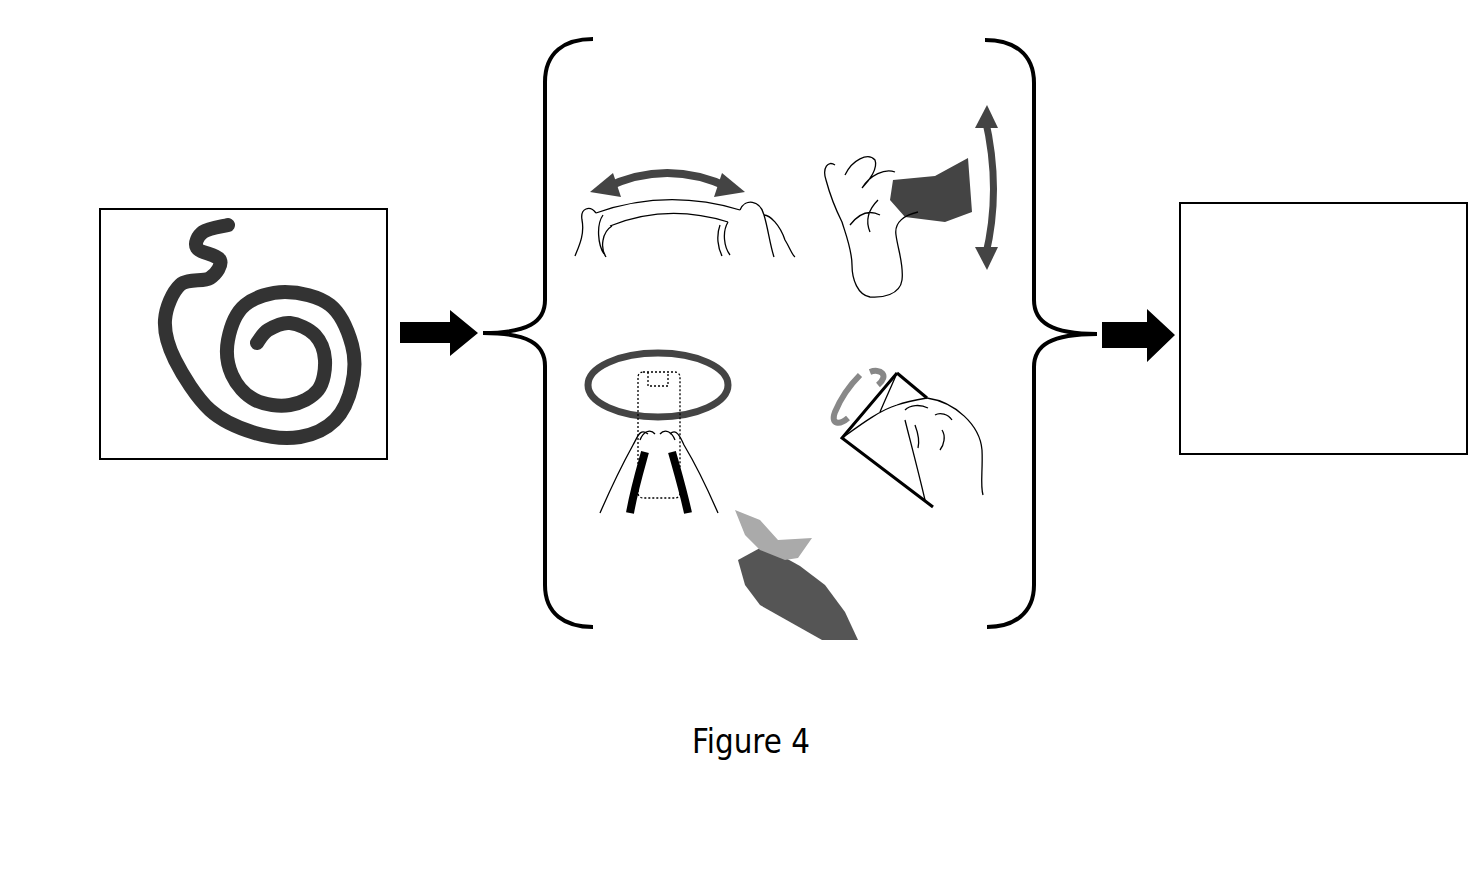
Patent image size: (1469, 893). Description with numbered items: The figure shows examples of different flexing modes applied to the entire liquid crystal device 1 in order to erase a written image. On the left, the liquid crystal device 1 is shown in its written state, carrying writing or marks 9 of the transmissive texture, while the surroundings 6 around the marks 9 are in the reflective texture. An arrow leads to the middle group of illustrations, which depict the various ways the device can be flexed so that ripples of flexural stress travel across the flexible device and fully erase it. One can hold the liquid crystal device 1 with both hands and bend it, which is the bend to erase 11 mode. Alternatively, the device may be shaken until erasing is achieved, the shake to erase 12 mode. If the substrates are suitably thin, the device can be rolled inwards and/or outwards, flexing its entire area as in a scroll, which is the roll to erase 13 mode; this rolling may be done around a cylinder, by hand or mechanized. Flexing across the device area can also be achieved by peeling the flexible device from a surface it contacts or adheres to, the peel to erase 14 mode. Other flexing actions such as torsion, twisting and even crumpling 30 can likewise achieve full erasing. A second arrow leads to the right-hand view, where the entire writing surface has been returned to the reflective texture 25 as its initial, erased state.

The liquid crystal device 1 is at (223, 470).
The surroundings 6 is at (305, 244).
The writing or marks 9 is at (189, 249).
The bend to erase 11 is at (685, 197).
The shake to erase 12 is at (911, 201).
The roll to erase 13 is at (658, 416).
The peel to erase 14 is at (908, 413).
The crumpling 30 is at (796, 555).
The reflective texture 25 is at (1312, 228).